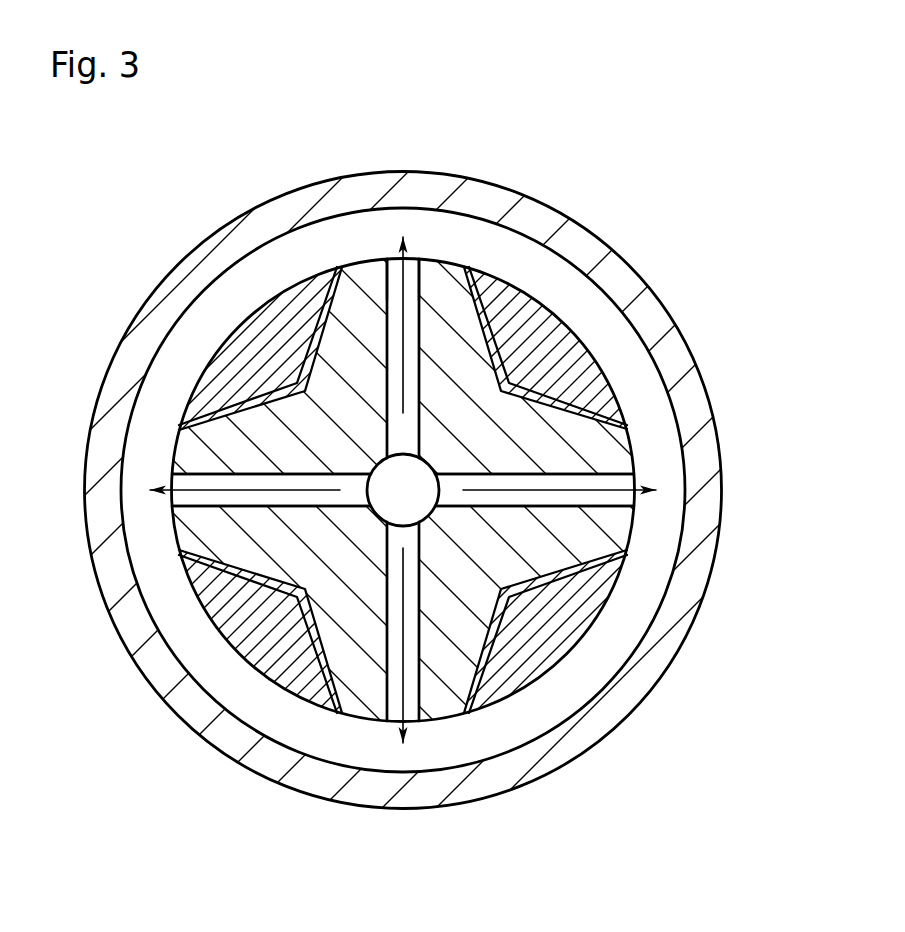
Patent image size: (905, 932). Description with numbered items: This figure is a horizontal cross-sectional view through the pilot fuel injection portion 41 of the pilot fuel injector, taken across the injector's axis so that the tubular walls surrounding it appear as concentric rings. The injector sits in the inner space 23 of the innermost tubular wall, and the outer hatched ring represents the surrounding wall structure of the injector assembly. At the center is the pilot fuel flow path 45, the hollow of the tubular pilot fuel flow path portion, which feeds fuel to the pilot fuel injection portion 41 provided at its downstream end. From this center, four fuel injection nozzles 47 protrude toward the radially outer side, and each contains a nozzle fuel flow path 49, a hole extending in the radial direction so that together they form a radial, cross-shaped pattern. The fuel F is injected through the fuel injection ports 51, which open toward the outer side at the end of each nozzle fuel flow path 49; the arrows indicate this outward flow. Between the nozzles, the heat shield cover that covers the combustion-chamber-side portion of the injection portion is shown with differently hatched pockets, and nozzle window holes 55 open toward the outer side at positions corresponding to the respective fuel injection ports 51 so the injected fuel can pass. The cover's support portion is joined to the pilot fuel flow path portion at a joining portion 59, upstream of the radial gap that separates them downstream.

The inner space 23 is at (231, 680).
The pilot fuel injection portion 41 is at (546, 398).
The pilot fuel flow path 45 is at (381, 503).
The fuel injection nozzle 47 is at (440, 285).
The nozzle fuel flow path 49 is at (367, 267).
The fuel injection port 51 is at (393, 282).
The nozzle window hole 55 is at (340, 263).
The joining portion 59 is at (413, 257).
The fuel F is at (403, 323).